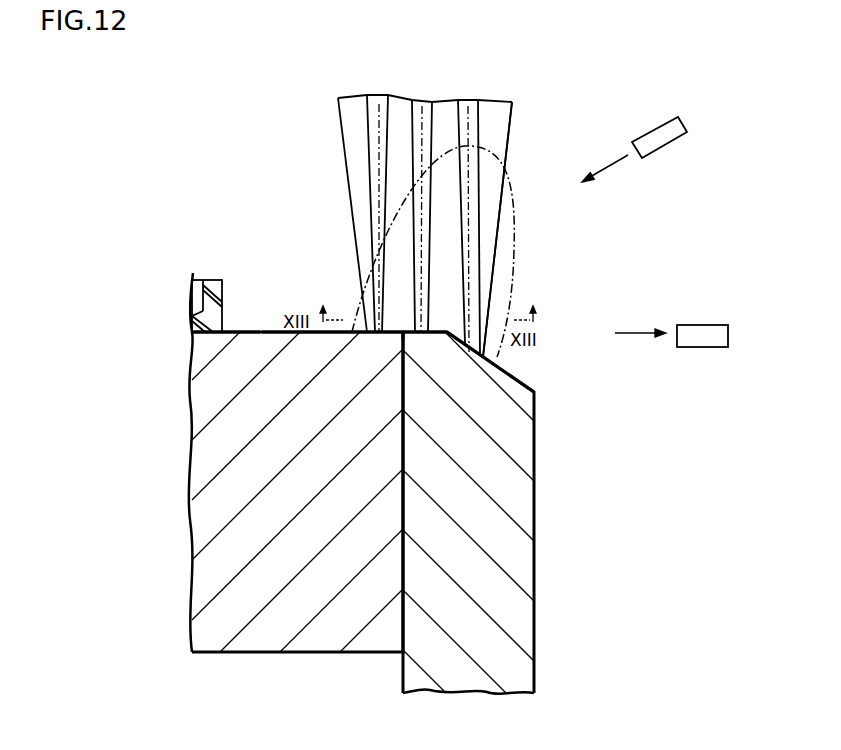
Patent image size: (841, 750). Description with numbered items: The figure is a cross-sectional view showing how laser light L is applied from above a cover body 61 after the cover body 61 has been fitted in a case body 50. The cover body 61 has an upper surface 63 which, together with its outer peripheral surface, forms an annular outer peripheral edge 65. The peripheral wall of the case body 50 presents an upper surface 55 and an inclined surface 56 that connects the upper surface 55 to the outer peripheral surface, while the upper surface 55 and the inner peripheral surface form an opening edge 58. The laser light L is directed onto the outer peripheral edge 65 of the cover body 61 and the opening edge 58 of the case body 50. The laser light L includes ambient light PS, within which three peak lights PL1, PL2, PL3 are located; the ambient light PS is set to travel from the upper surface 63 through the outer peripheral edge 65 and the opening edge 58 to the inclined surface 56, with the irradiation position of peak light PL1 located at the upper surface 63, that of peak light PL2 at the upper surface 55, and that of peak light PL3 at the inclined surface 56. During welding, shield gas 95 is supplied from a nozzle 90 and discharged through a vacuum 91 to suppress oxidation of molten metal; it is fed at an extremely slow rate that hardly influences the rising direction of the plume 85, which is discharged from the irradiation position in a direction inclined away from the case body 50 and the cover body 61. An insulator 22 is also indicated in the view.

The insulator 22 is at (190, 318).
The case body 50 is at (527, 498).
The upper surface 55 is at (430, 332).
The inclined surface 56 is at (516, 378).
The opening edge 58 is at (405, 330).
The cover body 61 is at (212, 403).
The upper surface 63 is at (262, 332).
The outer peripheral edge 65 is at (403, 332).
The plume 85 is at (513, 252).
The nozzle 90 is at (674, 120).
The vacuum 91 is at (712, 324).
The shield gas 95 is at (605, 174).
The laser light L is at (553, 49).
The peak light PL1 is at (375, 108).
The peak light PL2 is at (426, 100).
The peak light PL3 is at (472, 107).
The ambient light PS is at (500, 115).